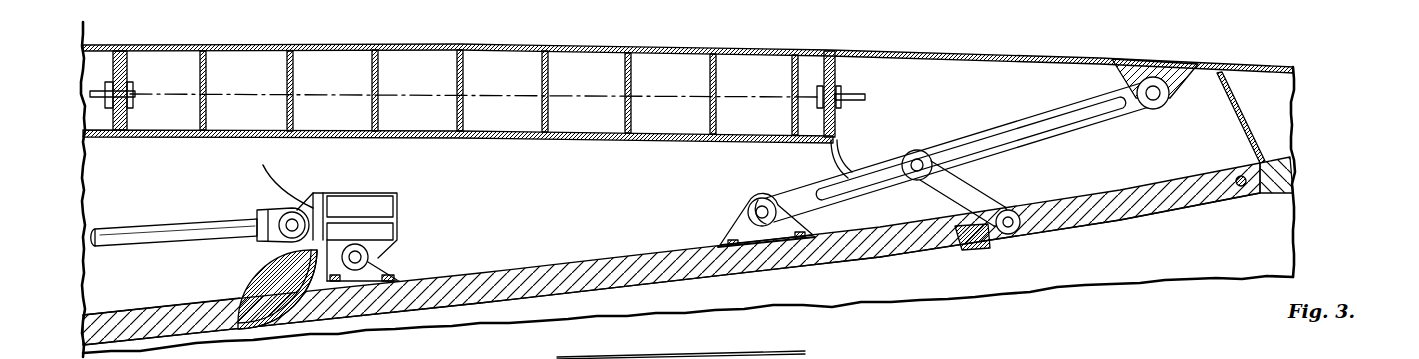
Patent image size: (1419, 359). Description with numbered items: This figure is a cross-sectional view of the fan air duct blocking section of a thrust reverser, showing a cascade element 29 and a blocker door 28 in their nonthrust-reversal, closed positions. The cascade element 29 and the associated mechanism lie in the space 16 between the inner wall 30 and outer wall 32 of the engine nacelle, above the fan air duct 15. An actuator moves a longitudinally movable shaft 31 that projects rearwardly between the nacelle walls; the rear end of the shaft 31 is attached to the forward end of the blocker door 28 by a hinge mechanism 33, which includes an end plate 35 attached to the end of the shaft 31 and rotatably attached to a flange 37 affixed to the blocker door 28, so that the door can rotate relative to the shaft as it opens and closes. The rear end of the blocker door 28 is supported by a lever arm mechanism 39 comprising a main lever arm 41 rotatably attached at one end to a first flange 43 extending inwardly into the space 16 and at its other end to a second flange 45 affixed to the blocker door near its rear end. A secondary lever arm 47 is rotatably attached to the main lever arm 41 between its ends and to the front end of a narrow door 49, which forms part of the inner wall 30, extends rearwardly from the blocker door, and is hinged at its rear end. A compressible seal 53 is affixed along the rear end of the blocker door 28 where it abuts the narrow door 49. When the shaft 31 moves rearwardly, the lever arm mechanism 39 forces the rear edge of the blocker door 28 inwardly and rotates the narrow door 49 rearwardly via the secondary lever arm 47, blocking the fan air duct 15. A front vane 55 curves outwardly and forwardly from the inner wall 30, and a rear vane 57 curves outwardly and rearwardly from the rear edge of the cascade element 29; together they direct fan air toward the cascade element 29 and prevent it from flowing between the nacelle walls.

The fan air duct 15 is at (816, 292).
The space between inner and outer walls 16 is at (1094, 170).
The blocker door 28 is at (895, 252).
The cascade element 29 is at (688, 104).
The inner wall 30 is at (1283, 182).
The longitudinally movable shaft 31 is at (184, 230).
The outer wall 32 is at (1093, 56).
The hinge mechanism 33 is at (420, 214).
The end plate 35 is at (400, 237).
The flange 37 is at (393, 260).
The lever arm mechanism 39 is at (956, 165).
The main lever arm 41 is at (1020, 119).
The first flange 43 is at (1174, 93).
The second flange 45 is at (740, 225).
The secondary lever arm 47 is at (980, 197).
The narrow door 49 is at (1168, 210).
The compressible seal 53 is at (968, 247).
The front vane 55 is at (308, 273).
The rear vane 57 is at (845, 148).